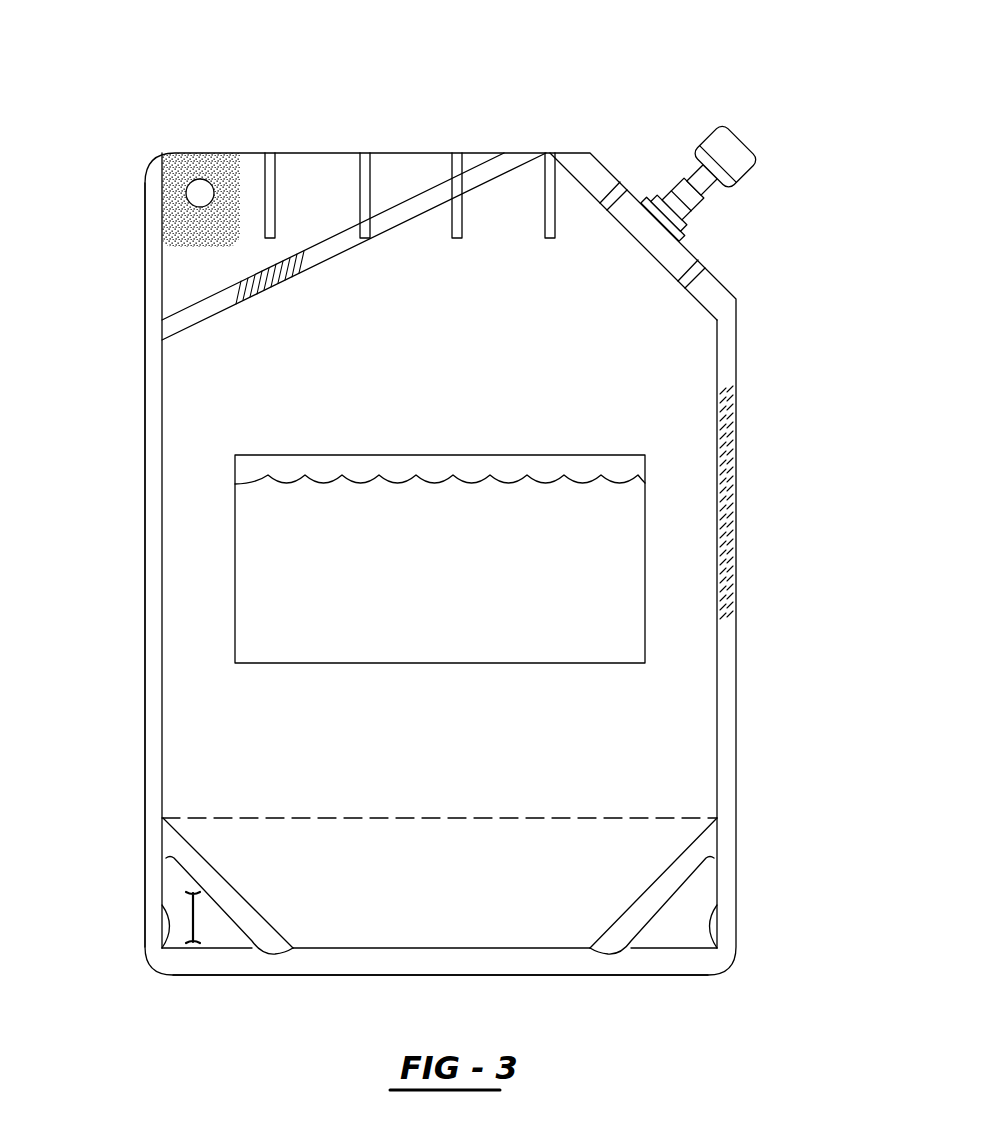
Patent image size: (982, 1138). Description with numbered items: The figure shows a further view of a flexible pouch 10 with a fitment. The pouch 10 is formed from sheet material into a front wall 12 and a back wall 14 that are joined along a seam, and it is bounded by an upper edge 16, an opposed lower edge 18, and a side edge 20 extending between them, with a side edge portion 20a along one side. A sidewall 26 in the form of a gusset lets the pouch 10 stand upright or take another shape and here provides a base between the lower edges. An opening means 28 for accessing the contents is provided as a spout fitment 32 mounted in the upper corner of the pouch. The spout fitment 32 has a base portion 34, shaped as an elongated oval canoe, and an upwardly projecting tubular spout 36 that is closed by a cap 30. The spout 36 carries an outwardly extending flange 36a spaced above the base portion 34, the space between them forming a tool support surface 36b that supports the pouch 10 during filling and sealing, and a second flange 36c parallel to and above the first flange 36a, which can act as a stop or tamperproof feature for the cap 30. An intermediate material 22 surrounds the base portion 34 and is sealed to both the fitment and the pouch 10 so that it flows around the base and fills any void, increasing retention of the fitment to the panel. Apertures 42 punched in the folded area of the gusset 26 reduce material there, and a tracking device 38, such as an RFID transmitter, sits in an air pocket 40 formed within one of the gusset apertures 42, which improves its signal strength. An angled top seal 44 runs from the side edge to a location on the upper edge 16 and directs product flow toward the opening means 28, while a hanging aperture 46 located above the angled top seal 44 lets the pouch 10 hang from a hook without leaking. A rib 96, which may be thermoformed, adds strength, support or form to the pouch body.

The flexible pouch 10 is at (547, 92).
The front wall 12 is at (637, 368).
The back wall 14 is at (145, 468).
The upper edge 16 is at (392, 160).
The lower edge 18 is at (547, 967).
The side edge 20 is at (727, 372).
The side edge 20a is at (147, 370).
The intermediate material 22 is at (710, 274).
The sidewall 26 is at (378, 913).
The opening means 28 is at (700, 132).
The cap 30 is at (725, 156).
The spout fitment 32 is at (717, 153).
The base portion 34 is at (693, 252).
The spout 36 is at (702, 180).
The flange 36a is at (669, 213).
The tool support surface 36b is at (663, 219).
The second flange 36c is at (683, 199).
The tracking device 38 is at (175, 912).
The air pocket 40 is at (212, 930).
The apertures 42 is at (183, 230).
The angled top seal 44 is at (183, 315).
The hanging aperture 46 is at (211, 179).
The rib 96 is at (360, 188).